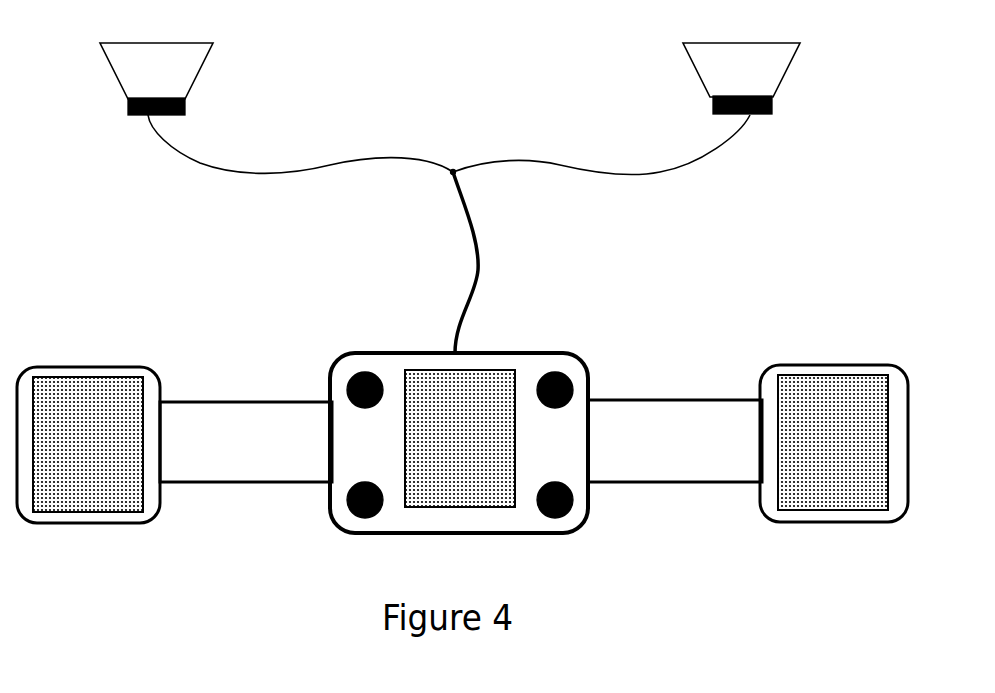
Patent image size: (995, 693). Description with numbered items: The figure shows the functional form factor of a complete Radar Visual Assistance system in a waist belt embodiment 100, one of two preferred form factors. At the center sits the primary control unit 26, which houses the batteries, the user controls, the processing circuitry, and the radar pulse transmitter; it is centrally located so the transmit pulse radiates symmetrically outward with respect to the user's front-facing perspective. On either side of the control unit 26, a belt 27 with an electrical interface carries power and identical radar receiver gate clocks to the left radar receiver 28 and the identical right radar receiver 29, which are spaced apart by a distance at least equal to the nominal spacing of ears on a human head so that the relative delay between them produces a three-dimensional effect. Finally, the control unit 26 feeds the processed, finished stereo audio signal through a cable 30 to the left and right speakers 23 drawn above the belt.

The waist belt embodiment 100 is at (137, 228).
The speakers 23 is at (198, 78).
The cable 30 is at (470, 243).
The primary control unit 26 is at (560, 352).
The belt 27 is at (235, 402).
The left radar receiver 28 is at (848, 365).
The right radar receiver 29 is at (103, 367).